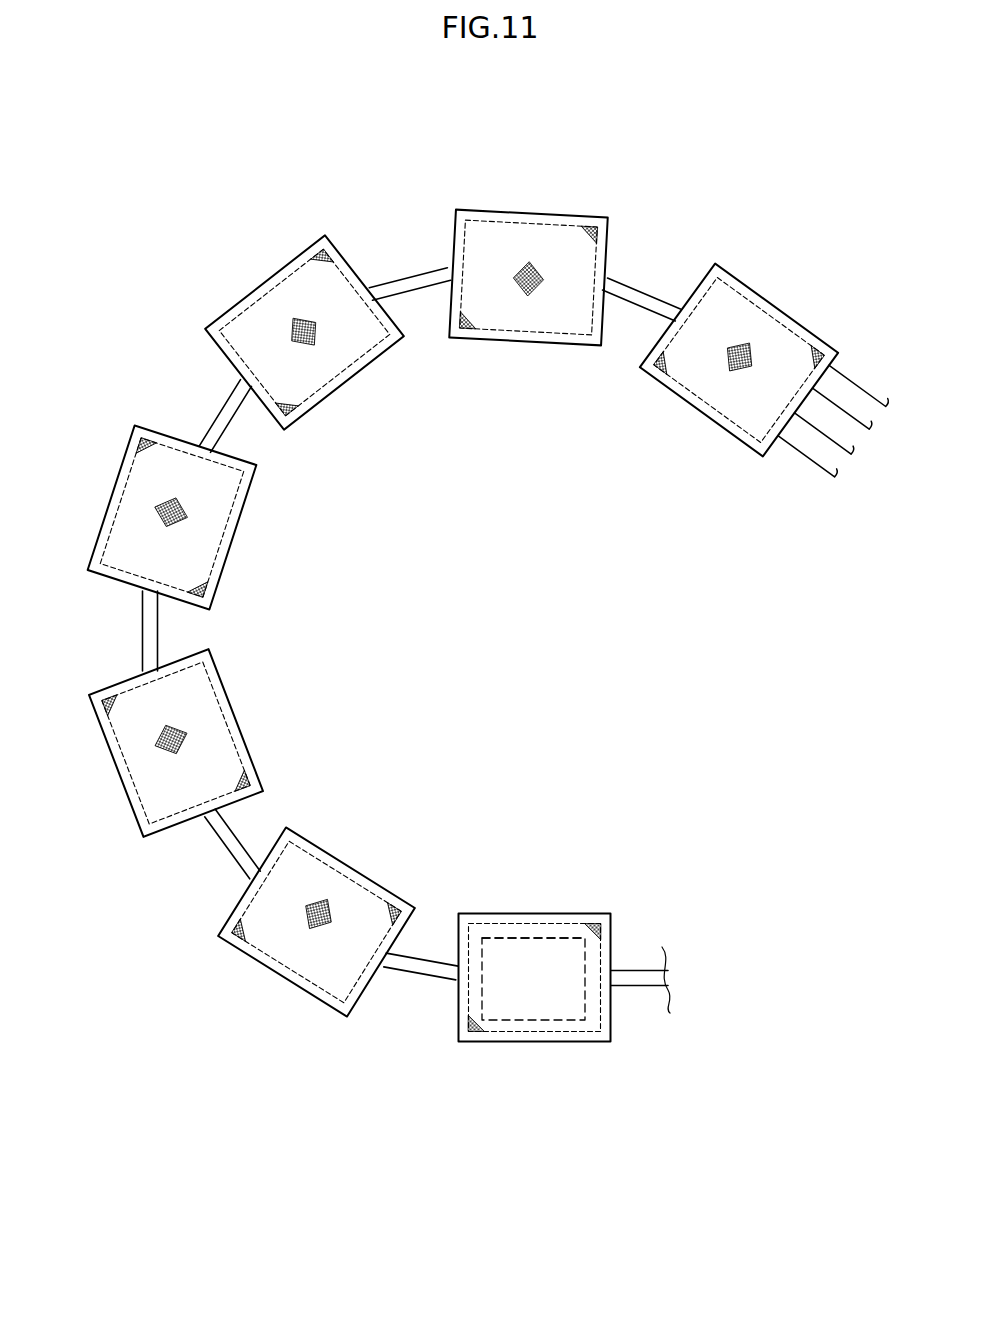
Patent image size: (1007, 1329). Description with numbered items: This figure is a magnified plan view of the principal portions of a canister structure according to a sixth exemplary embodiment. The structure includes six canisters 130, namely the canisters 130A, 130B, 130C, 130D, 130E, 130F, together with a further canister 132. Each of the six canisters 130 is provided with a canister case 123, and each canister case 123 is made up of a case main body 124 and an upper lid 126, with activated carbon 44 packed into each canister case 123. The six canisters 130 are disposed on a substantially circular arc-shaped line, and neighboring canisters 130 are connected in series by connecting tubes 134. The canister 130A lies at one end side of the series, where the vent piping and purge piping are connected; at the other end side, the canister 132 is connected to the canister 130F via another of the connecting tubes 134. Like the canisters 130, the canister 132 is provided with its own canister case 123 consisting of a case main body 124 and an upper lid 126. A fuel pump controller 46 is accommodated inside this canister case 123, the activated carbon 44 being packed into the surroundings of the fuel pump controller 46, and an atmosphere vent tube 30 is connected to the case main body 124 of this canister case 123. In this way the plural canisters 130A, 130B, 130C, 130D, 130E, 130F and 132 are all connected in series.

The canister 130 is at (488, 572).
The canister 130A is at (781, 280).
The canister 130B is at (545, 195).
The canister 130C is at (250, 245).
The canister 130D is at (245, 573).
The canister 130E is at (275, 768).
The canister 130F is at (392, 870).
The activated carbon 44 is at (302, 318).
The fuel pump controller 46 is at (542, 937).
The atmosphere vent tube 30 is at (640, 968).
The canister case 123 is at (412, 729).
The case main body 124 is at (330, 398).
The upper lid 126 is at (375, 340).
The canister 132 is at (565, 888).
The connecting tube 134 is at (414, 276).